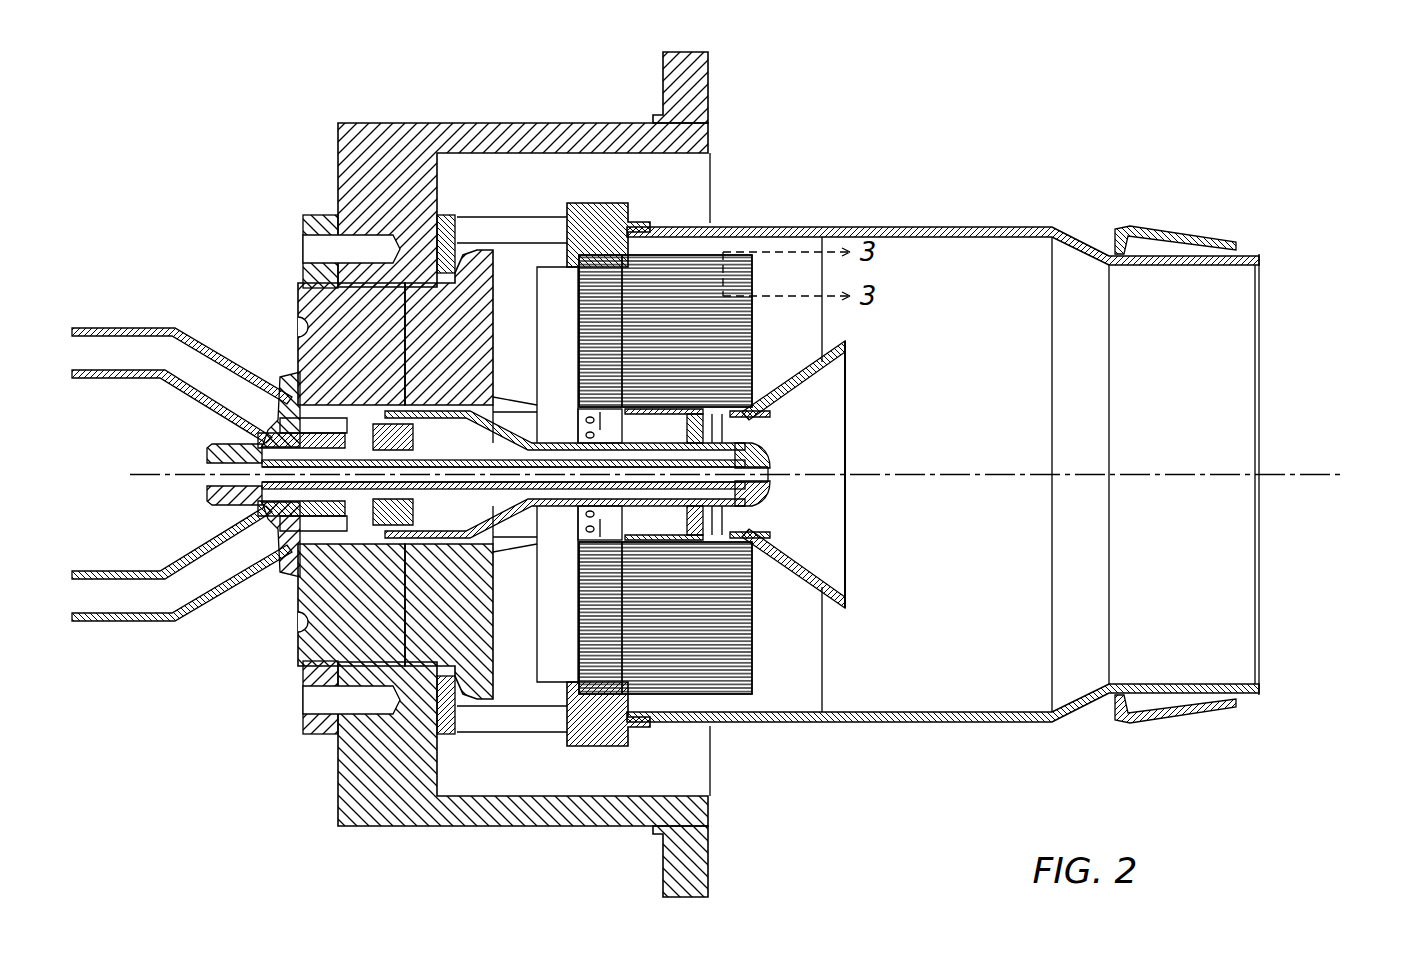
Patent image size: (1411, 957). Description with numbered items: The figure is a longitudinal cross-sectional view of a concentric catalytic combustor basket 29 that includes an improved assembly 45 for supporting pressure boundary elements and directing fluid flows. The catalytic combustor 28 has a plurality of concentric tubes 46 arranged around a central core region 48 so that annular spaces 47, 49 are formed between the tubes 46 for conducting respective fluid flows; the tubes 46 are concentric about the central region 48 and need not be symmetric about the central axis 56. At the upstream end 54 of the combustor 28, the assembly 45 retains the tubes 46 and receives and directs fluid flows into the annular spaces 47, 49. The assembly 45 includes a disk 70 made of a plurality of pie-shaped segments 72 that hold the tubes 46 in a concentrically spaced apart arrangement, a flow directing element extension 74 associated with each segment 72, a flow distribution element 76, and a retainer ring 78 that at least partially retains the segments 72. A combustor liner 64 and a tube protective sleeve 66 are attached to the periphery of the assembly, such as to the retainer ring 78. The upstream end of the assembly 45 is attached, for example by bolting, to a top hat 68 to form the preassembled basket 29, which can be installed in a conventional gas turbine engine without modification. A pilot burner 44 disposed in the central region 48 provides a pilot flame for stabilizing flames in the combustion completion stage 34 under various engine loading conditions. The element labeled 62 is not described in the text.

The catalytic combustor 28 is at (728, 204).
The concentric catalytic combustor basket 29 is at (938, 92).
The combustion completion stage 34 is at (960, 667).
The pilot burner 44 is at (768, 455).
The assembly 45 is at (503, 759).
The tubes 46 is at (678, 690).
The annular space 47 is at (722, 325).
The central core region 48 is at (756, 520).
The annular space 49 is at (740, 683).
The upstream end 54 is at (493, 171).
The central axis 56 is at (1318, 472).
The cone 62 is at (771, 355).
The combustor liner 64 is at (930, 232).
The tube protective sleeve 66 is at (797, 621).
The top hat 68 is at (688, 70).
The disk 70 is at (566, 291).
The pie-shaped segments 72 is at (548, 675).
The flow directing element extension 74 is at (515, 600).
The flow distribution element 76 is at (430, 585).
The retainer ring 78 is at (590, 735).